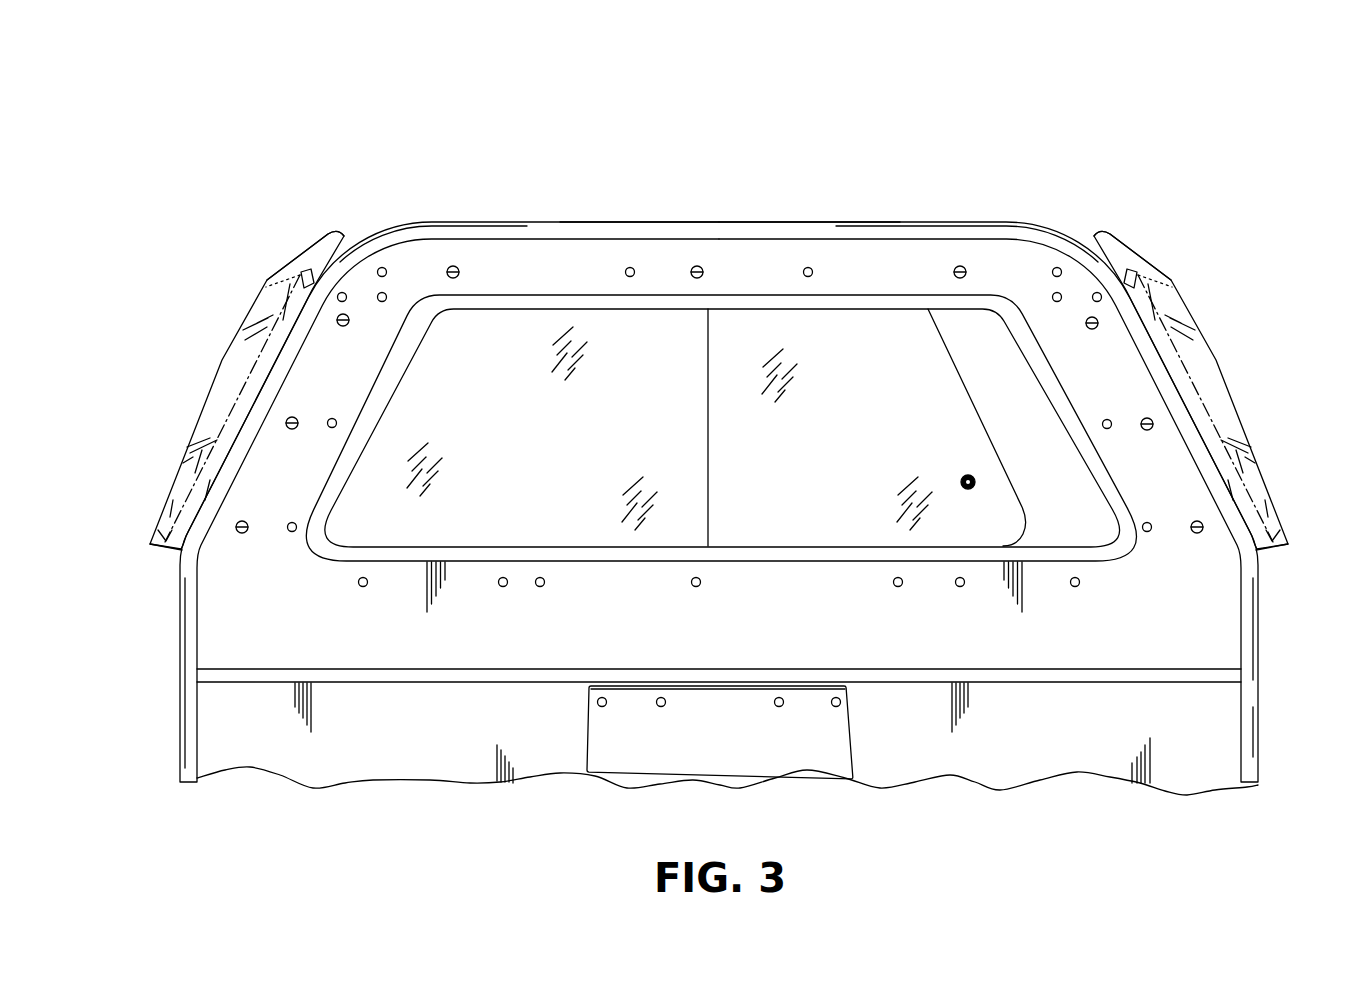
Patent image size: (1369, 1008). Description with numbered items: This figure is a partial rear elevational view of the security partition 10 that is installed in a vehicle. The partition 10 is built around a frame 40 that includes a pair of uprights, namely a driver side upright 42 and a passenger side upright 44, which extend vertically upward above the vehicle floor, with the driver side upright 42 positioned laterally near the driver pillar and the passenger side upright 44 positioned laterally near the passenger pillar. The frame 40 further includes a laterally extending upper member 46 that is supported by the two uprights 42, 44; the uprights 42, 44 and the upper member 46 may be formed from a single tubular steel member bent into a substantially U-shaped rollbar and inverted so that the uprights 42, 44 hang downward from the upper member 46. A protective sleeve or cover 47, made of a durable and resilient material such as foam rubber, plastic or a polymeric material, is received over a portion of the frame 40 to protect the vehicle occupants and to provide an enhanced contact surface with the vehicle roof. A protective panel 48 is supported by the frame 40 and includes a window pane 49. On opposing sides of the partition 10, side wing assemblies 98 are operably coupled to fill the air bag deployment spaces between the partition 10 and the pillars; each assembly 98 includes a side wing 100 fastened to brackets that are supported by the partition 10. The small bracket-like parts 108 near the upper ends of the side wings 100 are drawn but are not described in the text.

The security partition 10 is at (954, 158).
The frame 40 is at (197, 622).
The driver side upright 42 is at (197, 723).
The passenger side upright 44 is at (1255, 692).
The upper member 46 is at (545, 228).
The protective sleeve or cover 47 is at (720, 221).
The protective panel 48 is at (432, 762).
The window pane 49 is at (845, 338).
The side wing assembly 98 is at (221, 298).
The side wing 100 is at (190, 379).
The bracket 108 is at (320, 236).